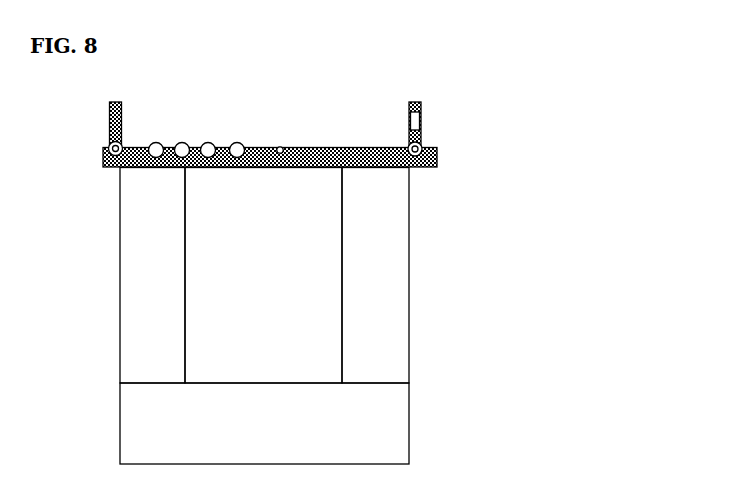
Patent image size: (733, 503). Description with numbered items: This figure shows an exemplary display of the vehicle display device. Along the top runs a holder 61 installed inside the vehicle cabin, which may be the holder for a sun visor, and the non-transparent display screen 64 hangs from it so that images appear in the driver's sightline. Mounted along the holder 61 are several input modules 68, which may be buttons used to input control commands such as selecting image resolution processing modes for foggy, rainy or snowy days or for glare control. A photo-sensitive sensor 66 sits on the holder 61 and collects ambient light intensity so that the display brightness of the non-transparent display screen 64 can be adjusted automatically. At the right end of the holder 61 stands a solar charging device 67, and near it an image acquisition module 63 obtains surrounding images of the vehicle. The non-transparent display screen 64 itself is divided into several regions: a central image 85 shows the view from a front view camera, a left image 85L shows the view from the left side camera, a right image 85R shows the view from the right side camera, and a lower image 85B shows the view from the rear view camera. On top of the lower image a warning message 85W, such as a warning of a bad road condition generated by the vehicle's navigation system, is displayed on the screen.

The holder 61 is at (332, 143).
The image acquisition module 63 is at (422, 155).
The non-transparent display screen 64 is at (119, 190).
The photo-sensitive sensor 66 is at (280, 147).
The solar charging device 67 is at (421, 113).
The input module 68 is at (207, 148).
The image 85 is at (263, 276).
The image 85L is at (152, 276).
The image 85R is at (375, 276).
The image 85B is at (264, 423).
The warning message 85W is at (332, 443).